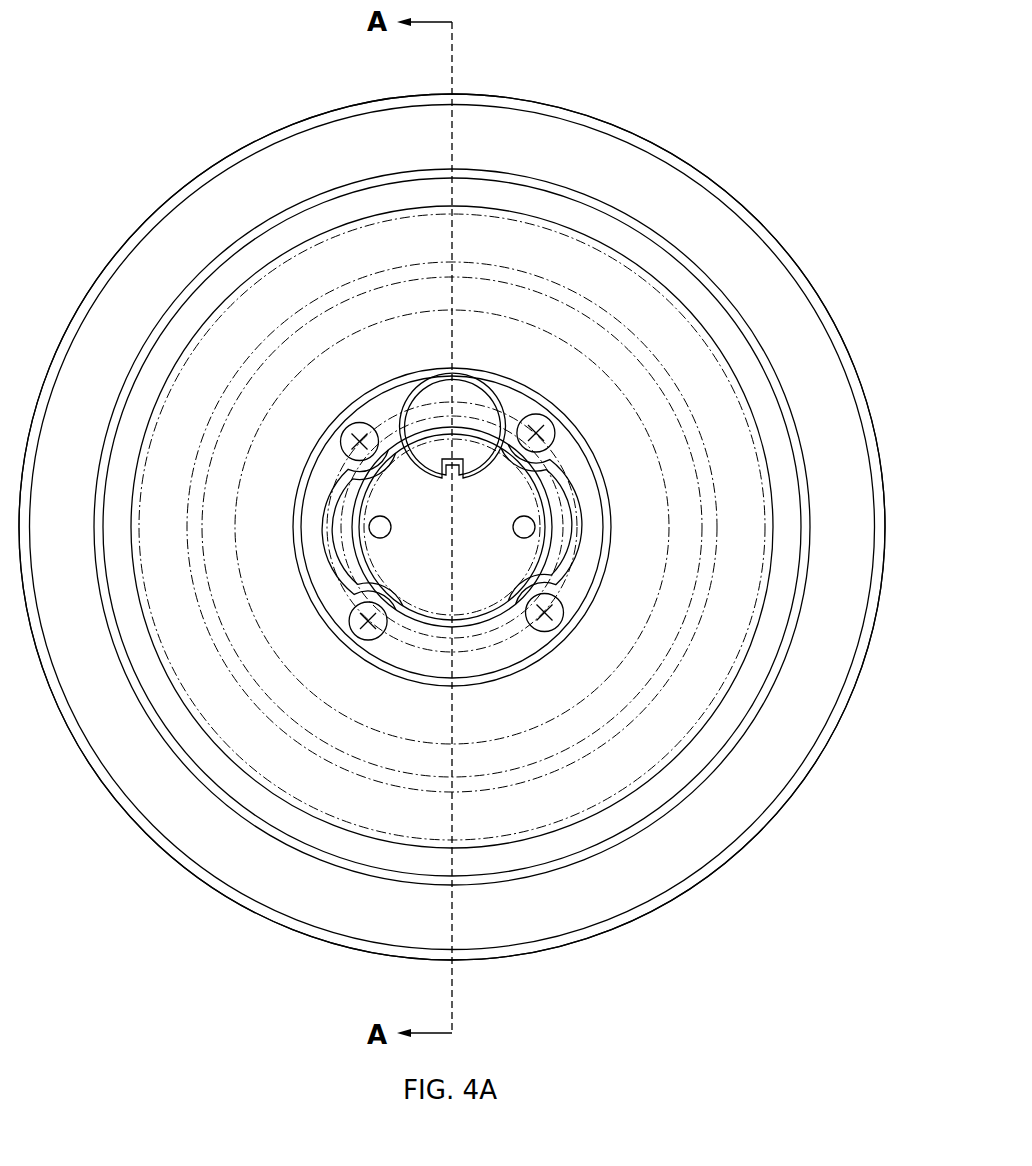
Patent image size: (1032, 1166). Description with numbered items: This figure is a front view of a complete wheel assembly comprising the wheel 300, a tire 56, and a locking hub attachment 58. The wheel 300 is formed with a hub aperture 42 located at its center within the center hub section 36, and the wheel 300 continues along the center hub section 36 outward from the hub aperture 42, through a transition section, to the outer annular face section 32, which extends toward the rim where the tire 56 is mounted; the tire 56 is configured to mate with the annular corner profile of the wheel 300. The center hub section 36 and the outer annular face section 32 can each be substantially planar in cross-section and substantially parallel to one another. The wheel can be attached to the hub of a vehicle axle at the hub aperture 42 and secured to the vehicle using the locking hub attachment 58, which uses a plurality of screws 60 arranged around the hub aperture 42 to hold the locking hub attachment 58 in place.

The wheel 300 is at (707, 158).
The outer annular face section 32 is at (288, 311).
The center hub section 36 is at (548, 371).
The hub aperture 42 is at (489, 535).
The tire 56 is at (590, 908).
The locking hub attachment 58 is at (612, 538).
The screws 60 is at (562, 609).